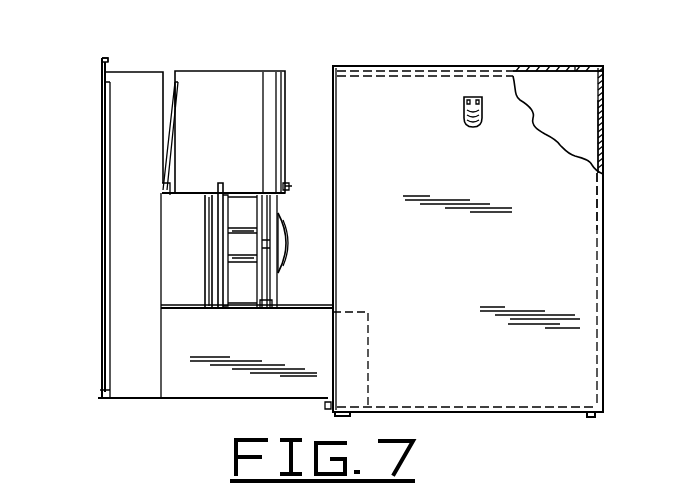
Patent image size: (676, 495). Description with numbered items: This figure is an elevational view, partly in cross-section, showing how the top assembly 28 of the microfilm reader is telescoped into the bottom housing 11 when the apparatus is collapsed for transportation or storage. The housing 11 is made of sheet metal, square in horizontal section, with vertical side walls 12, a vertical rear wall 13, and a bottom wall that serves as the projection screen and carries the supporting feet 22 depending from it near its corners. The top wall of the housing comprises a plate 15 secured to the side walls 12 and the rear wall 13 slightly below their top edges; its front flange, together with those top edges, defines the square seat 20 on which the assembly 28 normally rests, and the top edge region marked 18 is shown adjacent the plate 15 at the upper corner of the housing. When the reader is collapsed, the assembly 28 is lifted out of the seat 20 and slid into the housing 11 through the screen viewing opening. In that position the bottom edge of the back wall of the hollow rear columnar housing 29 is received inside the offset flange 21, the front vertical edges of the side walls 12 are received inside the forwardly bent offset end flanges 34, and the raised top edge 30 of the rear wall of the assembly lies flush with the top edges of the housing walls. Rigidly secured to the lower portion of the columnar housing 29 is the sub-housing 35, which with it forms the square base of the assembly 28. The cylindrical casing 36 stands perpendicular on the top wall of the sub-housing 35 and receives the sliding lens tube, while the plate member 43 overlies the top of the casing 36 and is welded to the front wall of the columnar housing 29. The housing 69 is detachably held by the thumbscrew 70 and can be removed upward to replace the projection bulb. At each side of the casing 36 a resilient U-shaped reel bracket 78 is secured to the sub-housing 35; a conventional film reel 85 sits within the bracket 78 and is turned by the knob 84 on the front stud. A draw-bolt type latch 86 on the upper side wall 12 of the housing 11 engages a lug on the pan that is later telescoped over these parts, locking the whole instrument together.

The housing 11 is at (606, 302).
The vertical side walls 12 is at (585, 197).
The vertical rear wall 13 is at (604, 133).
The plate 15 is at (528, 72).
The top rail 18 is at (548, 76).
The square seat 20 is at (578, 70).
The offset flange 21 is at (322, 405).
The supporting feet 22 is at (350, 414).
The top assembly 28 is at (97, 270).
The rear columnar housing 29 is at (128, 81).
The top edge of rear wall 30 is at (104, 57).
The vertical end flanges 34 is at (107, 198).
The sub-housing 35 is at (297, 308).
The cylindrical casing 36 is at (208, 260).
The plate member 43 is at (190, 192).
The housing 69 is at (285, 113).
The thumbscrew 70 is at (289, 186).
The reel bracket 78 is at (267, 308).
The knob 84 is at (288, 215).
The film reel 85 is at (238, 252).
The latches 86 is at (482, 113).